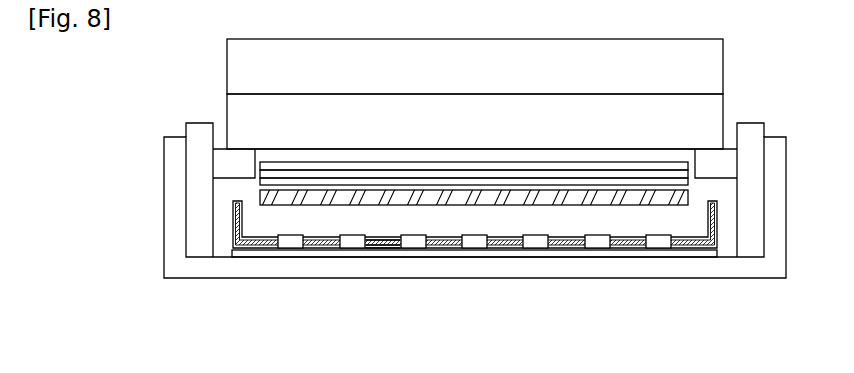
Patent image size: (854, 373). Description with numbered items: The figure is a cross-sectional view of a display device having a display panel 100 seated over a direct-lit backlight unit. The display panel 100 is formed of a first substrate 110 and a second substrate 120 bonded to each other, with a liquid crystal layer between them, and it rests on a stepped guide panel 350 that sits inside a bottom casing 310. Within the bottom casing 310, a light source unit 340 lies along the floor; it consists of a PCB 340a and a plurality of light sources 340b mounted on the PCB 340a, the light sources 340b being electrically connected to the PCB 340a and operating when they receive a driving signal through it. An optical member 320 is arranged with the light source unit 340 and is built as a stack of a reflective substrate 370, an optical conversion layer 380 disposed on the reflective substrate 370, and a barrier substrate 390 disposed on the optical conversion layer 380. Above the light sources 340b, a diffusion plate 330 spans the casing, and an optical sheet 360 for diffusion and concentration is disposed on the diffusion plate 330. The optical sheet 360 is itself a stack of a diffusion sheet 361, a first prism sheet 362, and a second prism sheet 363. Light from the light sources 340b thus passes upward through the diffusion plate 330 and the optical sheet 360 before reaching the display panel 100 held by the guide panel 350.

The display panel 100 is at (522, 94).
The first substrate 110 is at (718, 104).
The second substrate 120 is at (718, 62).
The bottom casing 310 is at (188, 273).
The optical member 320 is at (393, 298).
The diffusion plate 330 is at (502, 197).
The light source unit 340 is at (475, 272).
The PCB 340a is at (260, 250).
The light source 340b is at (285, 248).
The guide panel 350 is at (203, 248).
The optical sheet 360 is at (474, 260).
The diffusion sheet 361 is at (572, 180).
The first prism sheet 362 is at (592, 173).
The second prism sheet 363 is at (625, 167).
The reflective substrate 370 is at (373, 247).
The optical conversion layer 380 is at (383, 247).
The barrier substrate 390 is at (393, 247).